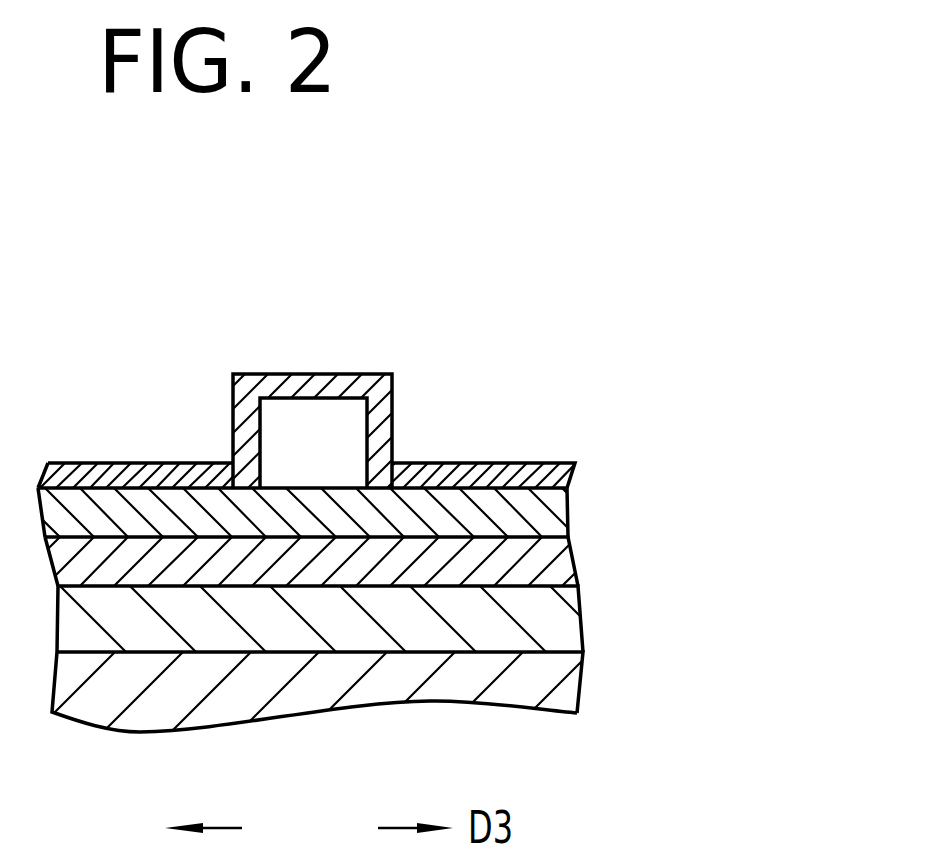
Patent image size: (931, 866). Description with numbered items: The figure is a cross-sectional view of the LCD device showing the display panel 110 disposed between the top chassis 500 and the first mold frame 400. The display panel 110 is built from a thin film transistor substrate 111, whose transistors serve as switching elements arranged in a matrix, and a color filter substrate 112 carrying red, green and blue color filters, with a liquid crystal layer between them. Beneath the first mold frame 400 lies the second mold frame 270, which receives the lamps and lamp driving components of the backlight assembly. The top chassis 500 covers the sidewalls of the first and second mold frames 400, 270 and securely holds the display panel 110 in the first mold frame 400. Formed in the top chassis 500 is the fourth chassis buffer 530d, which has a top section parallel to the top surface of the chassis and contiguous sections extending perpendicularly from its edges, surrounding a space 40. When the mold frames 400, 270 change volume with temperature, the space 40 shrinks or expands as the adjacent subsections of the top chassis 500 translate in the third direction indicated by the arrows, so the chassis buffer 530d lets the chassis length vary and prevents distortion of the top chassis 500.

The fourth chassis buffer 530d is at (308, 373).
The space 40 is at (337, 428).
The top chassis 500 is at (547, 473).
The display panel 110 is at (435, 545).
The color filter substrate 112 is at (542, 515).
The thin film transistor substrate 111 is at (542, 562).
The first mold frame 400 is at (543, 635).
The second mold frame 270 is at (548, 684).